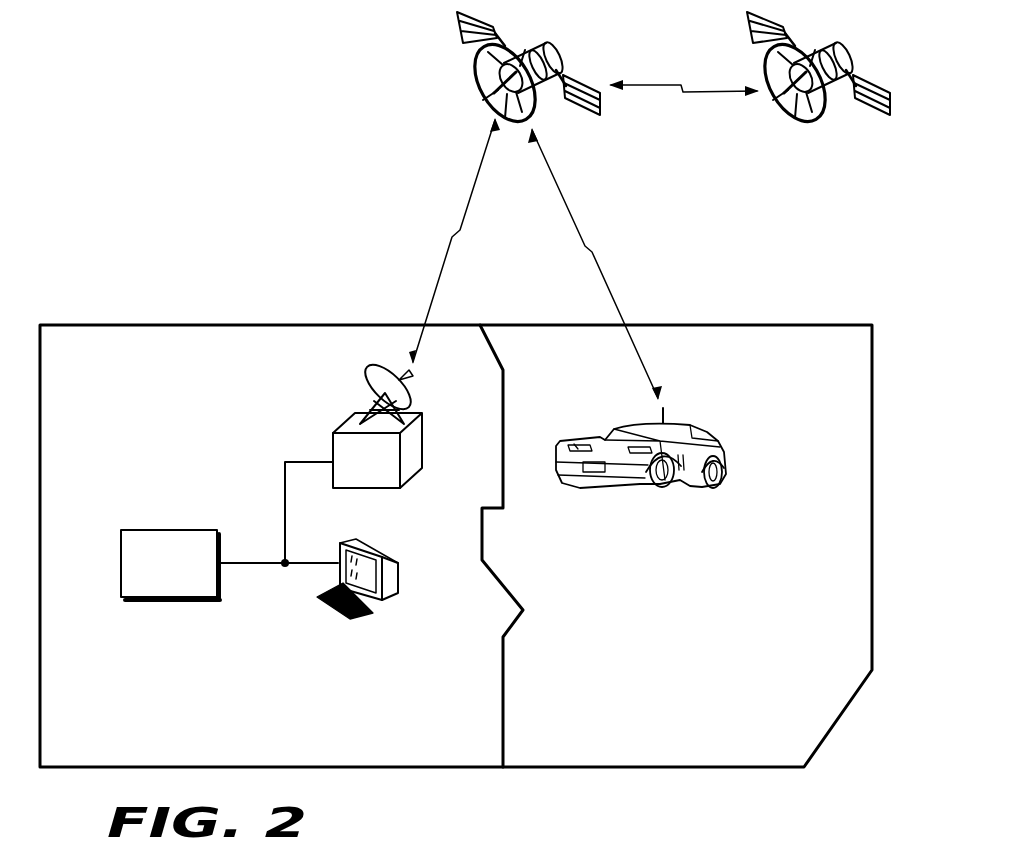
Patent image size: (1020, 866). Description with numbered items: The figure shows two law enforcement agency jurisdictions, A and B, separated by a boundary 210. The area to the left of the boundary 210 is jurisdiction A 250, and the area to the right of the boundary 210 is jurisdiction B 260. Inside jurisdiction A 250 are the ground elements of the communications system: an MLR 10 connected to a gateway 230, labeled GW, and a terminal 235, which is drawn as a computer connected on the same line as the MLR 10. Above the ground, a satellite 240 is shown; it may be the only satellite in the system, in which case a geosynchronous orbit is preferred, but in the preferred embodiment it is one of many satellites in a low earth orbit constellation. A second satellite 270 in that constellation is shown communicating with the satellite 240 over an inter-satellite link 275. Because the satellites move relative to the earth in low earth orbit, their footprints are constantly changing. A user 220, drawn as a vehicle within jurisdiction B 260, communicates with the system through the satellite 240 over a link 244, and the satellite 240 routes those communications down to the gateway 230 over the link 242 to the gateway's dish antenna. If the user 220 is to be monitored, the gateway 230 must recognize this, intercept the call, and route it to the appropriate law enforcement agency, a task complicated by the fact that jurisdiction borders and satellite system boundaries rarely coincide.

The MLR 10 is at (157, 530).
The boundary 210 is at (499, 683).
The user 220 is at (700, 431).
The gateway (GW) 230 is at (350, 414).
The terminal 235 is at (385, 597).
The satellite 240 is at (543, 43).
The satellite-to-gateway communication link 242 is at (462, 200).
The link 244 is at (570, 208).
The jurisdiction A 250 is at (149, 393).
The jurisdiction B 260 is at (776, 591).
The satellite 270 is at (833, 43).
The inter-satellite link 275 is at (720, 93).